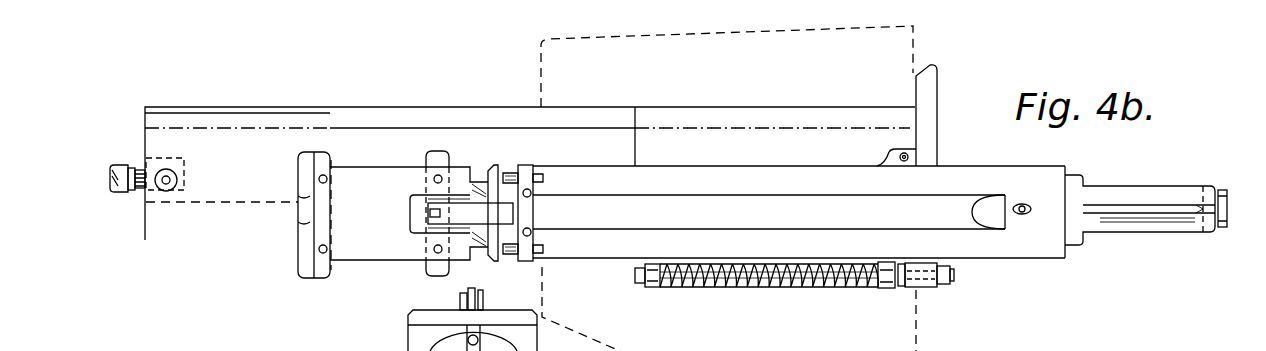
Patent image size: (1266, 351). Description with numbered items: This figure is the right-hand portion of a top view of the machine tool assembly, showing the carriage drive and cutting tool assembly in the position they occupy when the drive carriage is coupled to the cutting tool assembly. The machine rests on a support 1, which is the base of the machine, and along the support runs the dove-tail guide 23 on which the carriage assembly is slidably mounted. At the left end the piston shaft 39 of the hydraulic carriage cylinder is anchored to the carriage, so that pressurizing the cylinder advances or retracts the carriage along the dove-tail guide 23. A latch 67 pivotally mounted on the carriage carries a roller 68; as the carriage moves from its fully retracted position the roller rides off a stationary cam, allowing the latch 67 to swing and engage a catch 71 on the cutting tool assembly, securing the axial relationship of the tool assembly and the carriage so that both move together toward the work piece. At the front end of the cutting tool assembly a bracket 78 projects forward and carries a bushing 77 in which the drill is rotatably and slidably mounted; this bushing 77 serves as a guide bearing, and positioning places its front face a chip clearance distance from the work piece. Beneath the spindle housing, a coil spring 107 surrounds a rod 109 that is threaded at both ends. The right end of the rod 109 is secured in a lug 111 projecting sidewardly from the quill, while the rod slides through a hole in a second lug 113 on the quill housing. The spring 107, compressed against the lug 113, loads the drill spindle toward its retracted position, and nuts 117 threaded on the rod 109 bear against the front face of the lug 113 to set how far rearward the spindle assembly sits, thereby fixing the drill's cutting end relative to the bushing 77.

The support 1 is at (932, 127).
The dove-tail guide 23 is at (363, 108).
The piston shaft 39 is at (120, 195).
The latch 67 is at (475, 207).
The roller 68 is at (428, 213).
The catch 71 is at (506, 171).
The bushing 77 is at (1226, 230).
The bracket 78 is at (1143, 190).
The coil spring 107 is at (755, 285).
The rod 109 is at (813, 285).
The lug 111 is at (930, 292).
The lug 113 is at (888, 292).
The nuts 117 is at (903, 292).